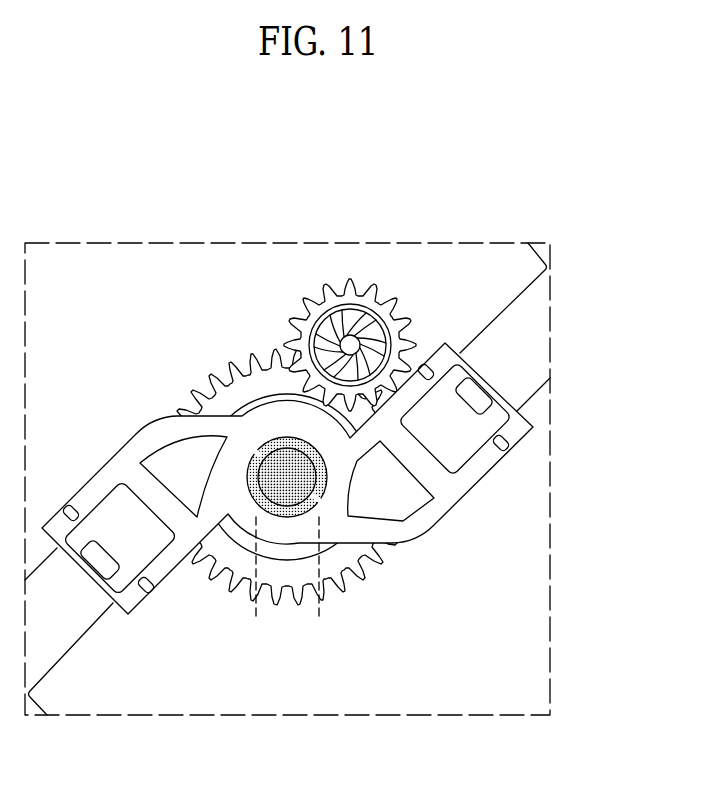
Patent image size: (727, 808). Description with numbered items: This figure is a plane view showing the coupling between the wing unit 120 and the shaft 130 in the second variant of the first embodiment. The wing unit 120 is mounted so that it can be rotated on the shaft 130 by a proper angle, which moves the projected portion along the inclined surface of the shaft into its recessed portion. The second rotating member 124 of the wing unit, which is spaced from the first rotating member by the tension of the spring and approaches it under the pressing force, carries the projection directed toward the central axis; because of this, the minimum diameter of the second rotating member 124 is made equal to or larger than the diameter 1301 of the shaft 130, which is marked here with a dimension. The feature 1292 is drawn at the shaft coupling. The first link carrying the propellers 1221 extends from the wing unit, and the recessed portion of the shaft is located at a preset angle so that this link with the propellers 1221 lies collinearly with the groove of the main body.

The wing unit 120 is at (137, 336).
The second rotating member 124 is at (340, 483).
The shaft 130 is at (270, 490).
The shaft bearing ring 1292 is at (262, 452).
The propellers 1221 is at (63, 618).
The diameter 1301 is at (319, 623).